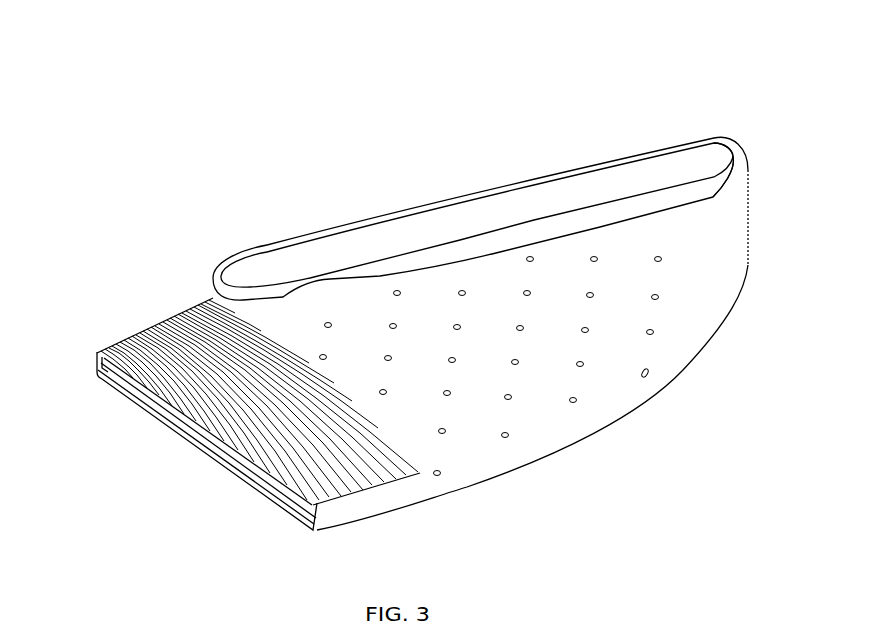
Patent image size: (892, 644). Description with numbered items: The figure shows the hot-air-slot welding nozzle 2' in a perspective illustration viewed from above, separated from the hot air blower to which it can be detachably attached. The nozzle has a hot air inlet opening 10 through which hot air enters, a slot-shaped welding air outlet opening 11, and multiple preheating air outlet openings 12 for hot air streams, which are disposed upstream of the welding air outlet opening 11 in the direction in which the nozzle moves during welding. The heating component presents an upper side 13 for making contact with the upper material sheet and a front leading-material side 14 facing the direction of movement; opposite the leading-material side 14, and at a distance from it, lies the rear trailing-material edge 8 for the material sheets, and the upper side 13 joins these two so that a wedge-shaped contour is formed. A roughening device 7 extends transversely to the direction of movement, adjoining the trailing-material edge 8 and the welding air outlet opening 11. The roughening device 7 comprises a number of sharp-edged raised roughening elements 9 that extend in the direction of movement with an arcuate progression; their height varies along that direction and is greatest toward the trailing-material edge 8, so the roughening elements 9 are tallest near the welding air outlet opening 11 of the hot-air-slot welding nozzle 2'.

The hot-air-slot welding nozzle 2' is at (433, 298).
The roughening device 7 is at (244, 395).
The rear trailing-material edge of the heating component 8 is at (167, 441).
The roughening elements 9 is at (317, 433).
The hot air inlet opening 10 is at (482, 210).
The slot-shaped welding air outlet opening 11 is at (137, 385).
The preheating air outlet openings 12 is at (573, 402).
The upper side of the heating component 13 is at (713, 233).
The front leading-material side of the heating component 14 is at (581, 378).